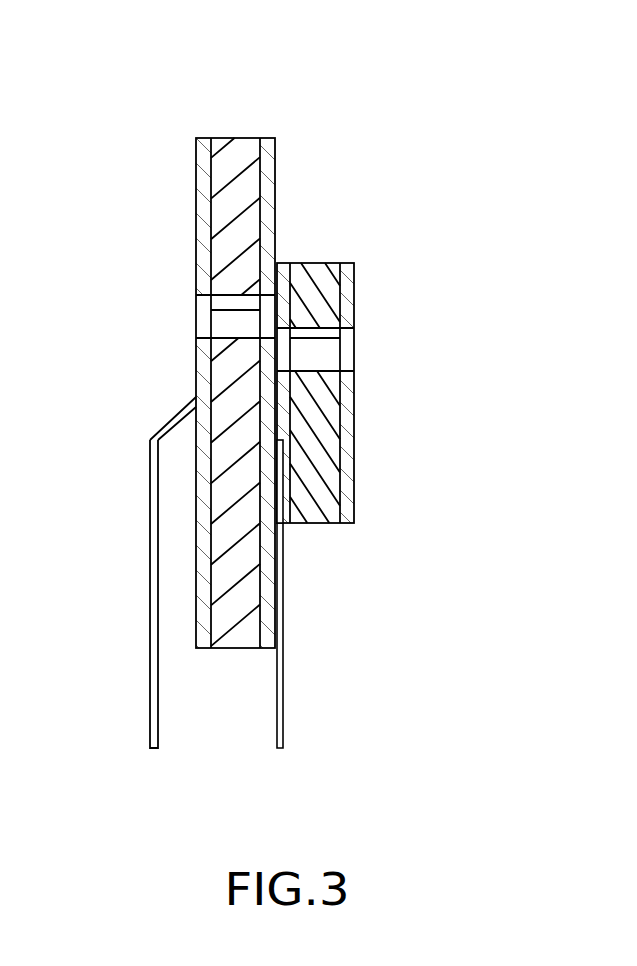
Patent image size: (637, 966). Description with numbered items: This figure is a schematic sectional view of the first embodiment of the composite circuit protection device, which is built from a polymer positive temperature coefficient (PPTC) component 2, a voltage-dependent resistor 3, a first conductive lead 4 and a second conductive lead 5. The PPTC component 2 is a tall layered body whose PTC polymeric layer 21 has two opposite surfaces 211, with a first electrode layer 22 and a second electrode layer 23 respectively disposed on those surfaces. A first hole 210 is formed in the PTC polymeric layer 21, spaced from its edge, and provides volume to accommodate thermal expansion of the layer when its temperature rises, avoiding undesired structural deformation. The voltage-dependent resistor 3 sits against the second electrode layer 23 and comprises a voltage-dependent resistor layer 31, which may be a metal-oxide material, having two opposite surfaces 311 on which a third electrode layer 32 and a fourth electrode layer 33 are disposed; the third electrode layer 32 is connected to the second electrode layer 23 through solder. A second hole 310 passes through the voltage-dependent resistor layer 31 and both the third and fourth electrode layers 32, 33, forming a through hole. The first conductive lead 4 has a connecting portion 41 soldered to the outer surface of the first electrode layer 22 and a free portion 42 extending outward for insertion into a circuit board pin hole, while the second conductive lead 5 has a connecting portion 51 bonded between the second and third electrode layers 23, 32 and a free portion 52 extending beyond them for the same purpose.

The polymer positive temperature coefficient (PPTC) component 2 is at (200, 345).
The PTC polymeric layer 21 is at (233, 150).
The first electrode layer 22 is at (205, 150).
The second electrode layer 23 is at (269, 150).
The first hole 210 is at (227, 328).
The opposite surfaces 211 is at (212, 310).
The voltage-dependent resistor 3 is at (377, 335).
The voltage-dependent resistor layer 31 is at (318, 268).
The third electrode layer 32 is at (285, 268).
The fourth electrode layer 33 is at (347, 268).
The second hole 310 is at (320, 360).
The opposite surfaces 311 is at (320, 348).
The first conductive lead 4 is at (119, 572).
The connecting portion 41 is at (168, 424).
The free portion 42 is at (72, 440).
The second conductive lead 5 is at (389, 594).
The connecting portion 51 is at (277, 477).
The free portion 52 is at (278, 637).